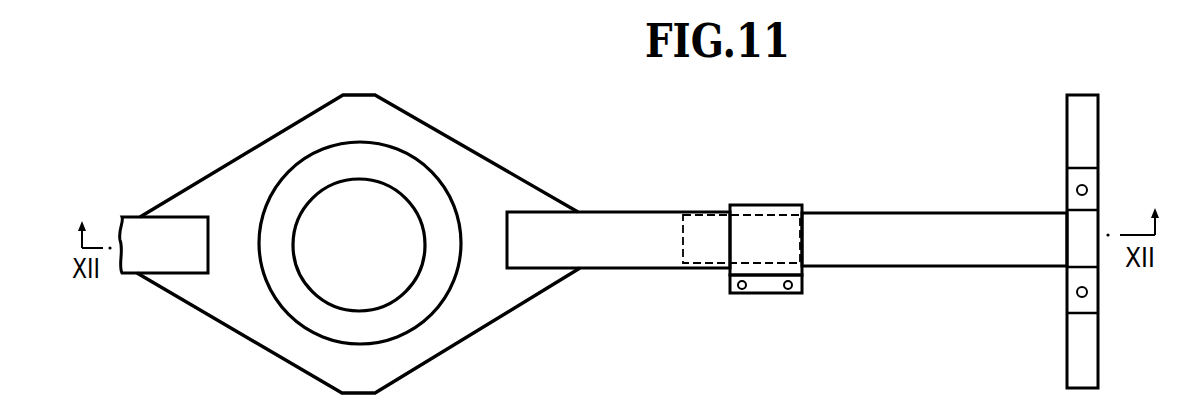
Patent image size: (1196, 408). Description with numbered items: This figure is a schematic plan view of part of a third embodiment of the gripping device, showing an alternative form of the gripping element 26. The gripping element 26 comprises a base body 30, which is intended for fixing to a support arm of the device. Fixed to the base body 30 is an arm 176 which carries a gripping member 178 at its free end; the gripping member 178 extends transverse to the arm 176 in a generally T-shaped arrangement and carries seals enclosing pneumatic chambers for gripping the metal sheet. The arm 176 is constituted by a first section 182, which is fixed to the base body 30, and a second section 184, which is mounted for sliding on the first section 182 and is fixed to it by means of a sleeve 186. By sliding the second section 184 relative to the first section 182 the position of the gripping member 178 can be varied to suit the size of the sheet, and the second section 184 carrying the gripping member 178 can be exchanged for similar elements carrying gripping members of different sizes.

The gripping element 26 is at (508, 325).
The base body 30 is at (480, 164).
The first section 182 is at (133, 266).
The second section 184 is at (932, 223).
The sleeve 186 is at (760, 223).
The arm 176 is at (767, 296).
The gripping member 178 is at (1097, 168).